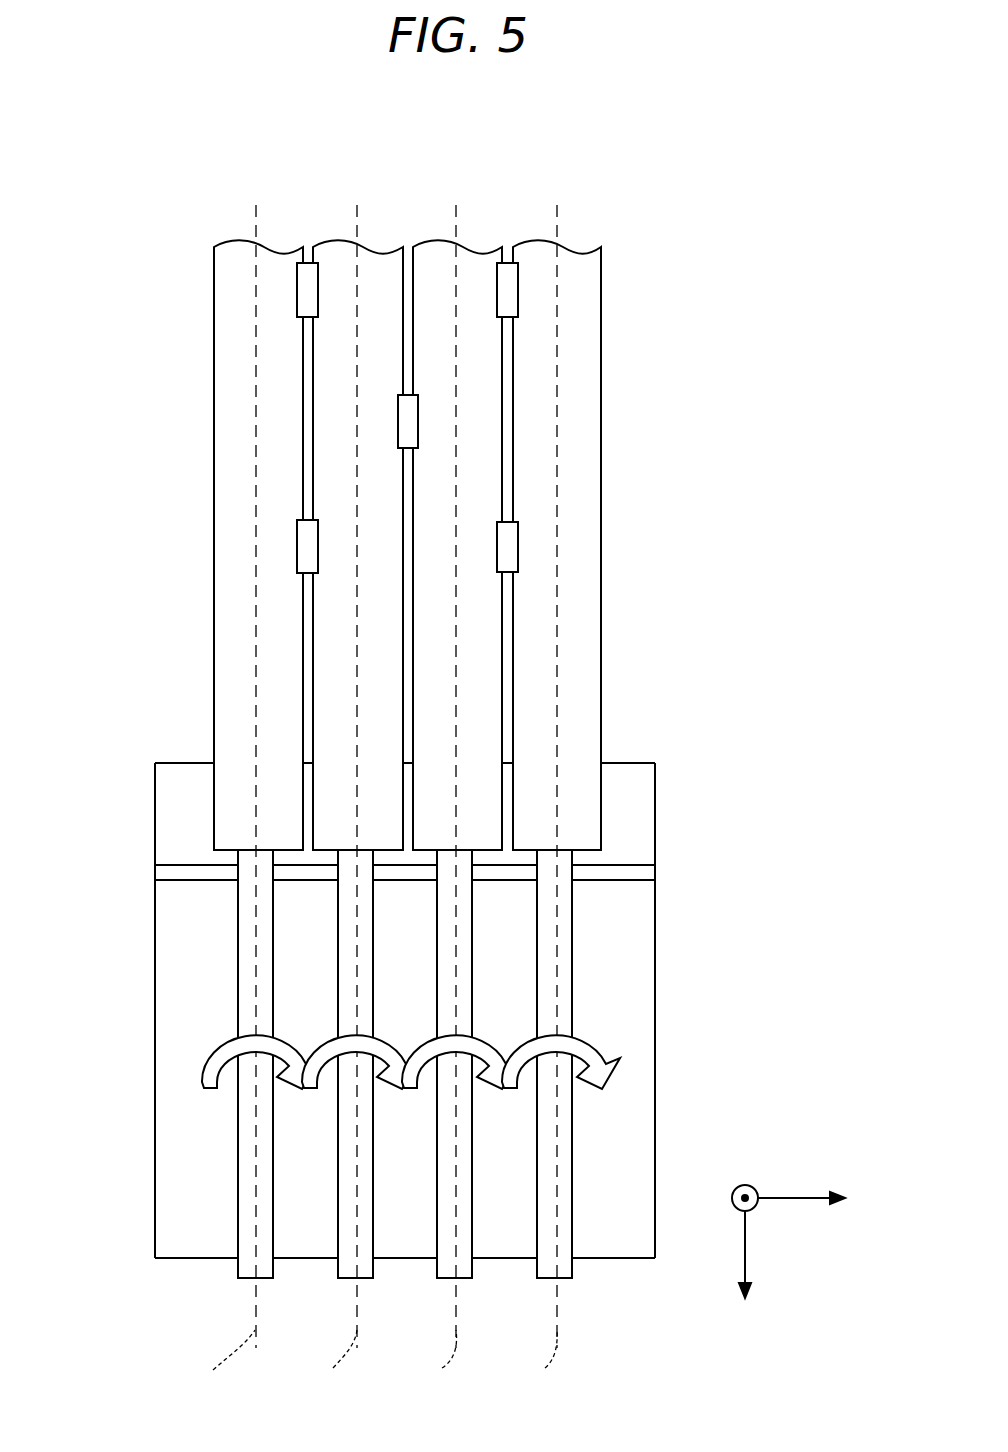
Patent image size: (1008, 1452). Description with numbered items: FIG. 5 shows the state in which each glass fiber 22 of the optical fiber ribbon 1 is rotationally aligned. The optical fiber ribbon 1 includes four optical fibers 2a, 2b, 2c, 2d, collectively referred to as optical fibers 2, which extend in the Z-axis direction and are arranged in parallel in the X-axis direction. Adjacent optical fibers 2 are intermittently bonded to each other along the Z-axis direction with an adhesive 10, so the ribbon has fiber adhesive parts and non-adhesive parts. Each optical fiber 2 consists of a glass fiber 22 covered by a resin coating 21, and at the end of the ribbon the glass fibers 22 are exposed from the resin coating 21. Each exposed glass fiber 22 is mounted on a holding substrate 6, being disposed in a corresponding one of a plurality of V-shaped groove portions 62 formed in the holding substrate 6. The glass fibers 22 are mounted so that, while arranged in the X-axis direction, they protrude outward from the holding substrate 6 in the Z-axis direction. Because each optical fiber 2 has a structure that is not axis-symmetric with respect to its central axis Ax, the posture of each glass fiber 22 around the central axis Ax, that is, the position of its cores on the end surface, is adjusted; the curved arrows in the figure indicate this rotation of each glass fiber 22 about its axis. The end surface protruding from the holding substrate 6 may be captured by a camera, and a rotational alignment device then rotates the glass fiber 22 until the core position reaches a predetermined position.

The optical fiber ribbon 1 is at (138, 293).
The optical fibers 2 is at (426, 487).
The optical fiber 2a is at (220, 277).
The optical fiber 2b is at (382, 257).
The optical fiber 2c is at (477, 255).
The optical fiber 2d is at (590, 270).
The adhesive 10 is at (305, 263).
The resin coating 21 is at (426, 487).
The glass fiber 22 is at (243, 963).
The holding substrate 6 is at (647, 955).
The V-shaped groove portions 62 is at (242, 1153).